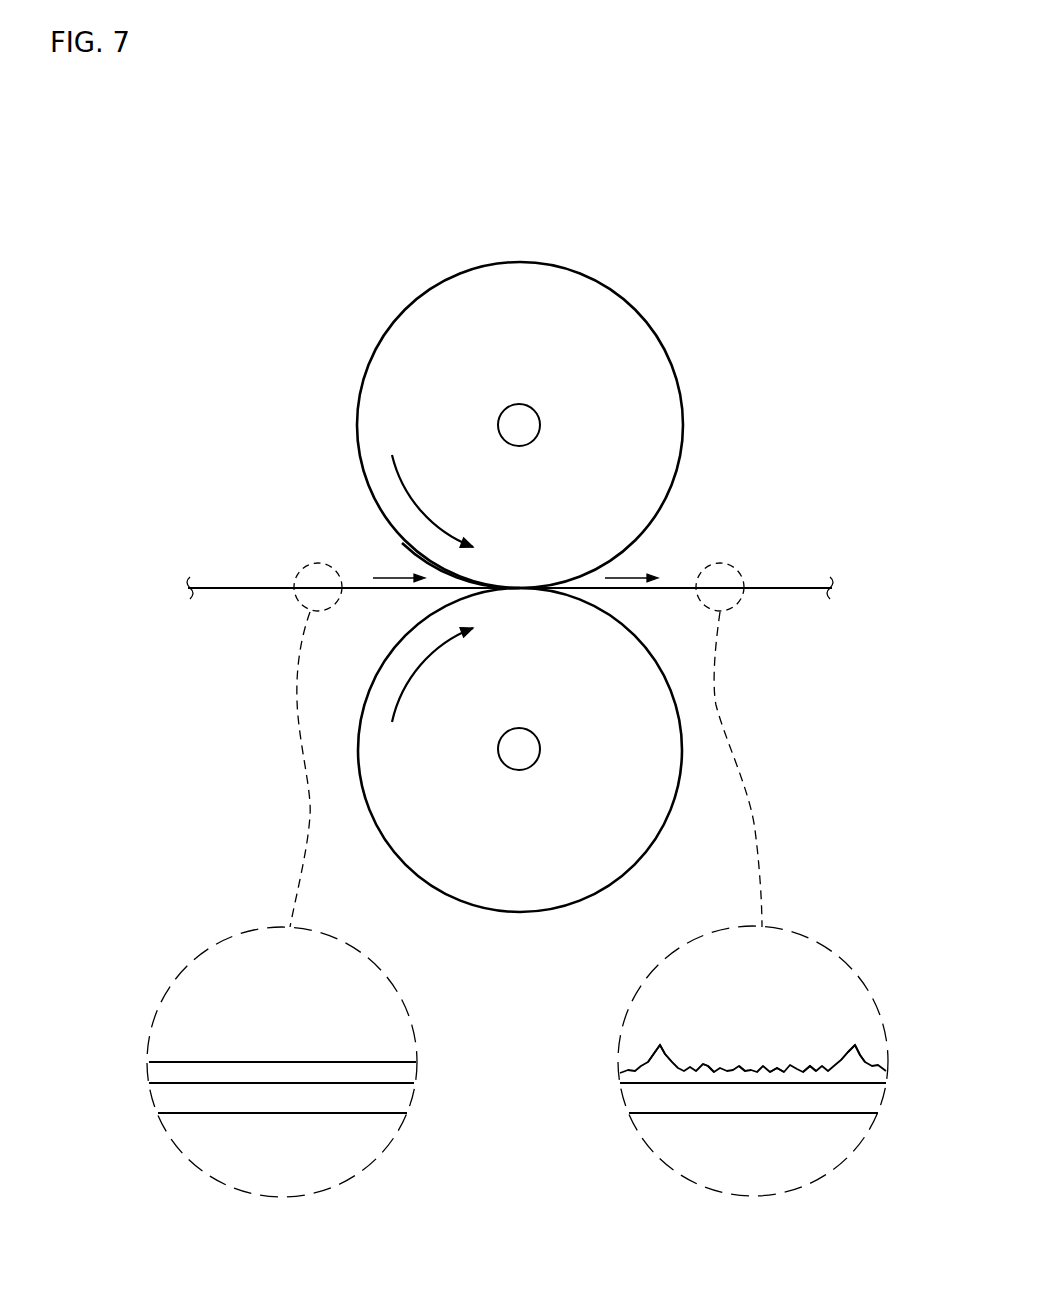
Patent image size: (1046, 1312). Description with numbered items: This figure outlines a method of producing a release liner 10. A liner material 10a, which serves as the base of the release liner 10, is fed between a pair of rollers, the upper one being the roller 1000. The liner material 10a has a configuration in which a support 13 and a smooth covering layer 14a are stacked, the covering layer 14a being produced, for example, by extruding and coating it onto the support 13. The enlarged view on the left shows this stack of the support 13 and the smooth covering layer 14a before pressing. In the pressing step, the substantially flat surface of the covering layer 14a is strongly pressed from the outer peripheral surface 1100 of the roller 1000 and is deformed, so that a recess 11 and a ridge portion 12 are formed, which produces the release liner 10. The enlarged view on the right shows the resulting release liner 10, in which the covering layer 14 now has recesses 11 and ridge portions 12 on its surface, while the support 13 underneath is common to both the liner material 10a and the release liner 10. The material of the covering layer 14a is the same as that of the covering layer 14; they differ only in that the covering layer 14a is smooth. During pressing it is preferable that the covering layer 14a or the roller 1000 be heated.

The roller 1000 is at (352, 330).
The outer peripheral surface 1100 is at (402, 543).
The liner material 10a is at (257, 585).
The release liner 10 is at (775, 583).
The covering layer 14a is at (165, 1074).
The covering layer 14 is at (877, 1077).
The support 13 is at (170, 1102).
The ridge portion 12 is at (661, 1055).
The recess 11 is at (712, 1068).